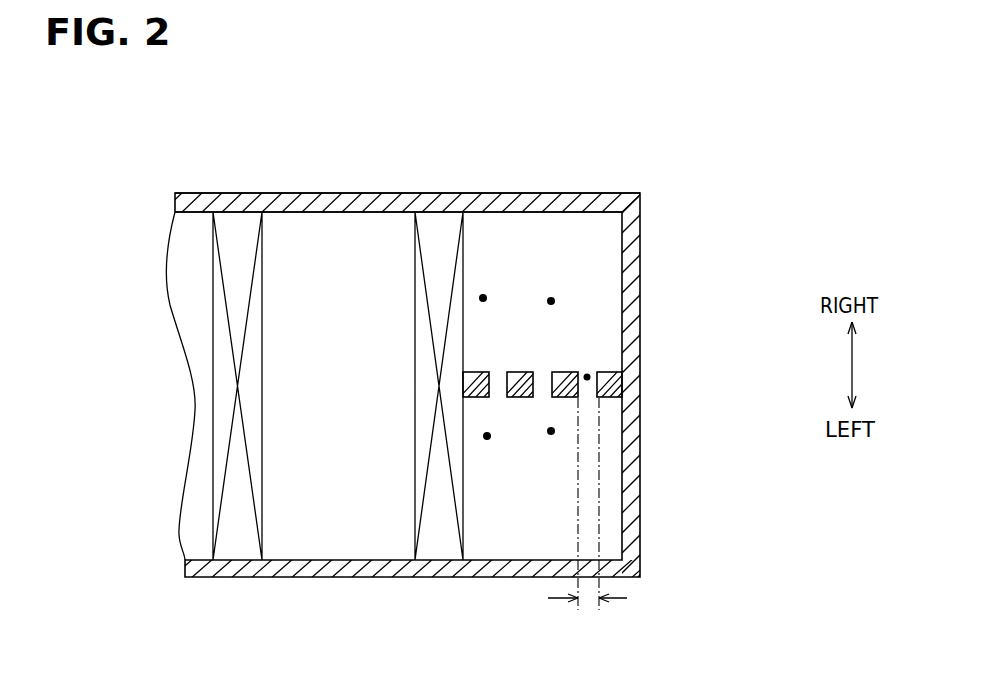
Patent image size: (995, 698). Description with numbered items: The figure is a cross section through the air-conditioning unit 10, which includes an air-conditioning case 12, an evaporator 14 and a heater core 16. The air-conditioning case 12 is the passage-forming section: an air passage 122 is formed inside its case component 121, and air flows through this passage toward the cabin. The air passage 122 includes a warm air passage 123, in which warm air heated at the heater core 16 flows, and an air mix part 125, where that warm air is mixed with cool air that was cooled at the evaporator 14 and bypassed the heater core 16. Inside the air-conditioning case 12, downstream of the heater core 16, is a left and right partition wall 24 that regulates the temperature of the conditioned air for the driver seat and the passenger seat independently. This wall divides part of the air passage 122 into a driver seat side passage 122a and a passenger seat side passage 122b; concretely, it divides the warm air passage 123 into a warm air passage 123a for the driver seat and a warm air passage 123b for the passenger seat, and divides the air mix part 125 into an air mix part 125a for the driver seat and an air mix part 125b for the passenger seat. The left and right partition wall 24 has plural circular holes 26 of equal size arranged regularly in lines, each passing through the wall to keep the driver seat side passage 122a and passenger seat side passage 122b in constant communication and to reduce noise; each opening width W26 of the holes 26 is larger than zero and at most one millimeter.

The air-conditioning unit 10 is at (172, 137).
The air-conditioning case 12 is at (230, 193).
The case component 121 is at (310, 193).
The air passage 122 is at (296, 298).
The driver seat side passage 122a is at (553, 267).
The passenger seat side passage 122b is at (538, 490).
The warm air passage 123 is at (498, 389).
The warm air passage for the driver seat 123a is at (483, 298).
The warm air passage for the passenger seat 123b is at (487, 436).
The air mix part 125 is at (672, 365).
The air mix part for the driver seat 125a is at (551, 301).
The air mix part for the passenger seat 125b is at (551, 431).
The evaporator 14 is at (213, 488).
The heater core 16 is at (413, 468).
The left and right partition wall 24 is at (568, 400).
The holes 26 is at (587, 377).
The opening width of the holes W26 is at (588, 603).